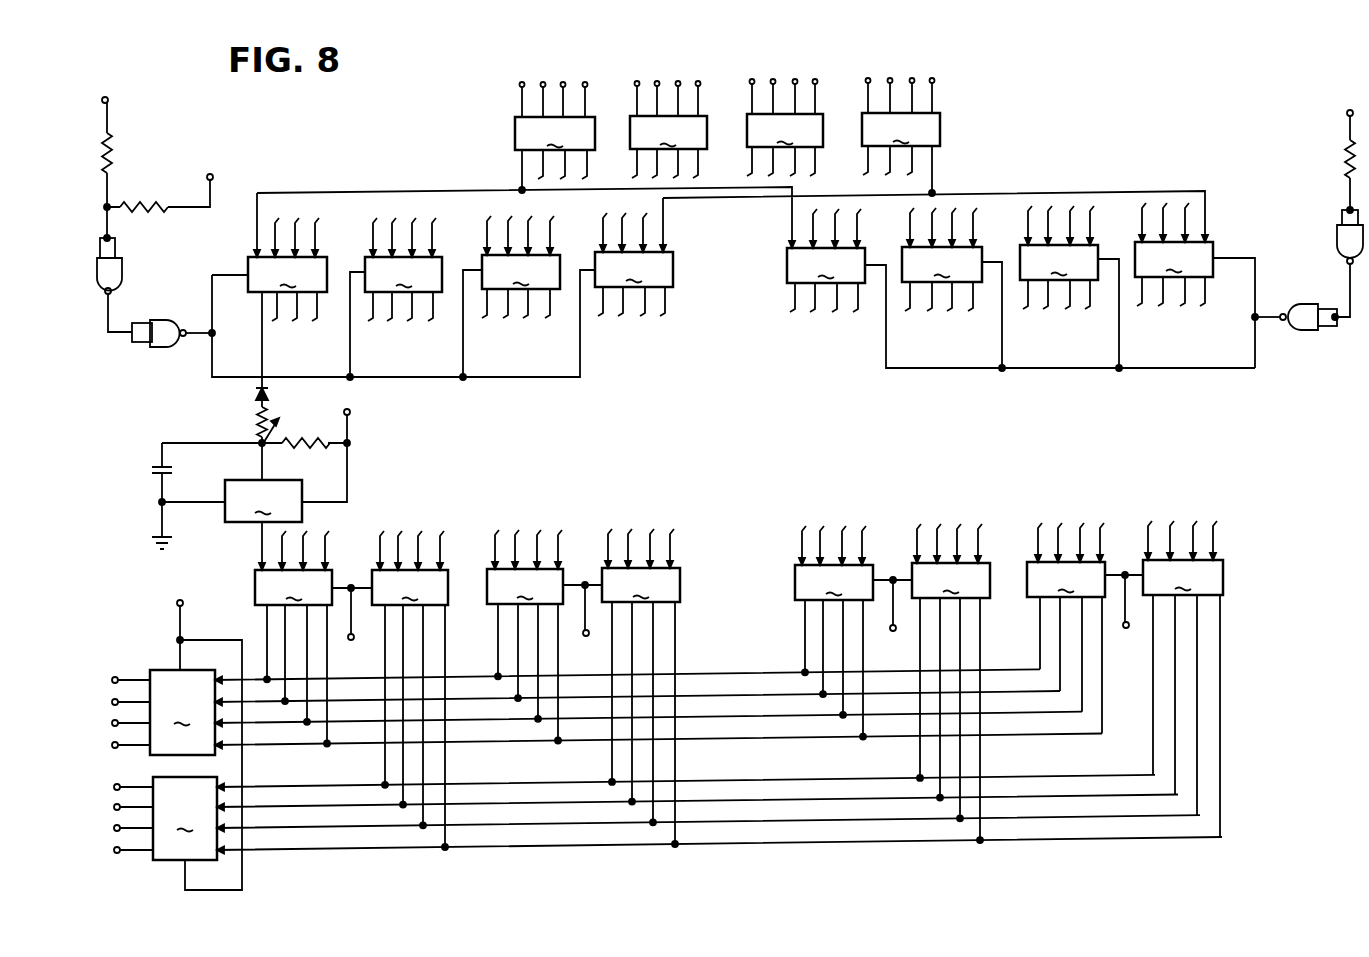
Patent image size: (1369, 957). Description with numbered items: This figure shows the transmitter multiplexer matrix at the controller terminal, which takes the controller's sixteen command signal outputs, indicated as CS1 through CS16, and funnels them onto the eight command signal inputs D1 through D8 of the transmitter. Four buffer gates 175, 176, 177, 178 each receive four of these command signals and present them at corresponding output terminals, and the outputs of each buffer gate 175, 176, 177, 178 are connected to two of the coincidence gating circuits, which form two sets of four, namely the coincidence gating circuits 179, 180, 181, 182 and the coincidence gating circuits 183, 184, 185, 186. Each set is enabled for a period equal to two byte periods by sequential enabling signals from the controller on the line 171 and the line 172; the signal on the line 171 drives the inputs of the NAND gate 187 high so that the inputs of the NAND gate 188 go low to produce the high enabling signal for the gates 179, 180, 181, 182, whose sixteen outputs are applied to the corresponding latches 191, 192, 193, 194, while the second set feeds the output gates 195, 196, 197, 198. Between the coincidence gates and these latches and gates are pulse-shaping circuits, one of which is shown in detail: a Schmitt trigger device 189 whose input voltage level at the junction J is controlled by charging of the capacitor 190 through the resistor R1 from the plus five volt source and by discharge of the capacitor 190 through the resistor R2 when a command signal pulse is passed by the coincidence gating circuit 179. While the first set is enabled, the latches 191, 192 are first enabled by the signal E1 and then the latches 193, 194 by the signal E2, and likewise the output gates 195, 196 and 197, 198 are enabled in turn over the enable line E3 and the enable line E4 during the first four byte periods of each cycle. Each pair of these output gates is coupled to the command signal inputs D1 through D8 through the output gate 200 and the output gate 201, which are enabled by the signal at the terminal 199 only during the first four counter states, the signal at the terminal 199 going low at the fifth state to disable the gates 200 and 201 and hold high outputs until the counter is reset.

The line 171 is at (109, 101).
The line 172 is at (1348, 111).
The buffer gate 175 is at (555, 137).
The buffer gate 176 is at (668, 129).
The buffer gate 177 is at (785, 127).
The buffer gate 178 is at (901, 137).
The coincidence gating circuit 179 is at (403, 290).
The coincidence gating circuit 180 is at (396, 297).
The coincidence gating circuit 181 is at (511, 296).
The coincidence gating circuit 182 is at (634, 264).
The coincidence gating circuit 183 is at (1021, 290).
The coincidence gating circuit 184 is at (952, 288).
The coincidence gating circuit 185 is at (1069, 287).
The coincidence gating circuit 186 is at (1196, 285).
The NAND gate 187 is at (122, 275).
The NAND gate 188 is at (168, 320).
The Schmitt trigger device 189 is at (232, 506).
The capacitor 190 is at (153, 470).
The latch 191 is at (313, 639).
The latch 192 is at (410, 690).
The latch 193 is at (544, 637).
The latch 194 is at (641, 688).
The output gate 195 is at (853, 633).
The output gate 196 is at (951, 683).
The output gate 197 is at (1085, 628).
The output gate 198 is at (1183, 679).
The terminal 199 is at (182, 601).
The output gate 200 is at (607, 712).
The output gate 201 is at (668, 817).
The resistor R1 is at (257, 427).
The resistor R2 is at (301, 441).
The junction J is at (276, 423).
The command signal output CS1 is at (517, 85).
The command signal output CS16 is at (932, 79).
The command signal input D1 is at (115, 678).
The command signal input D8 is at (117, 853).
The signal E1 is at (353, 625).
The signal E2 is at (585, 624).
The enable line E3 is at (892, 619).
The enable line E4 is at (1125, 614).